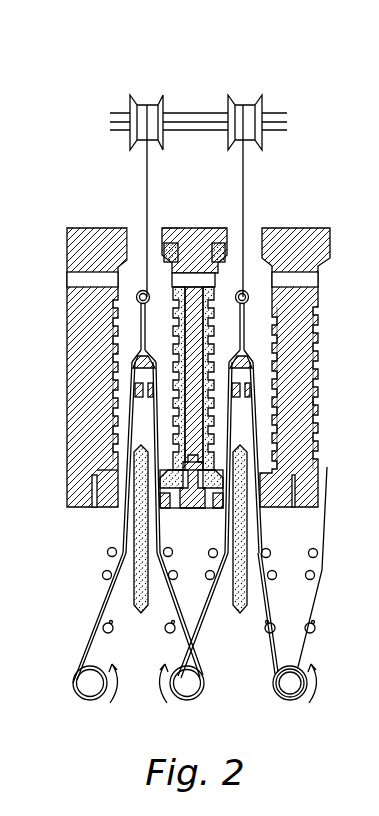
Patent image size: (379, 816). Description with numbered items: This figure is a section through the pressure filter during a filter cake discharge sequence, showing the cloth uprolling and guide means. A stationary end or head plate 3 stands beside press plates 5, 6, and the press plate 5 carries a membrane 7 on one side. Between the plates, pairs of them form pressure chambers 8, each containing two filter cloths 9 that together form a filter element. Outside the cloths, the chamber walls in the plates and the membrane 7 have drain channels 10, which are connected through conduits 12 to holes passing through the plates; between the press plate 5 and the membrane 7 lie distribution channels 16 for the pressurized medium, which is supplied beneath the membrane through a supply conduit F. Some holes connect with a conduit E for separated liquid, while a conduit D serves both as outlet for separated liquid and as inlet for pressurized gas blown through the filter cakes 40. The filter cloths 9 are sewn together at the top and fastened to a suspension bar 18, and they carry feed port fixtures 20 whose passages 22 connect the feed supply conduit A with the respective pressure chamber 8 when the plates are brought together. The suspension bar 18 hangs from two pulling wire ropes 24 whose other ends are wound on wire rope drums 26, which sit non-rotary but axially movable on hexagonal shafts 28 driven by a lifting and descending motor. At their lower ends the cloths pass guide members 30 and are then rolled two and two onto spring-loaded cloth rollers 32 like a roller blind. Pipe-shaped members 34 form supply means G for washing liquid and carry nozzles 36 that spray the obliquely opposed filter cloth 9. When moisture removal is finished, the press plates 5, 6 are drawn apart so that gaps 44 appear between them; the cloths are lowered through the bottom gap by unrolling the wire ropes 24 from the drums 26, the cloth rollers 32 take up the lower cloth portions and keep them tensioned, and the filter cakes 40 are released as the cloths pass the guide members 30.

The stationary end or head plate 3 is at (186, 360).
The press plate 5 is at (210, 227).
The press plate 6 is at (303, 228).
The membrane 7 is at (180, 412).
The pressure chamber 8 is at (118, 312).
The filter cloth 9 is at (130, 405).
The drain channel 10 is at (315, 325).
The conduit 12 is at (92, 488).
The distribution channel 16 is at (160, 227).
The suspension bar 18 is at (222, 248).
The feed port fixture 20 is at (317, 373).
The passage 22 is at (313, 402).
The pulling wire rope 24 is at (145, 165).
The wire rope drum 26 is at (228, 102).
The hexagonal shaft 28 is at (267, 110).
The guide member 30 is at (103, 575).
The spring-loaded cloth roller 32 is at (185, 690).
The pipe-shaped member 34 is at (189, 623).
The nozzle 36 is at (111, 622).
The filter cake 40 is at (146, 590).
The gap 44 is at (128, 228).
The feed supply conduit A is at (68, 282).
The combined inlet and outlet conduit D is at (163, 508).
The conduit for separated liquid E is at (80, 508).
The supply conduit F is at (198, 508).
The supply means for washing liquid G is at (168, 633).